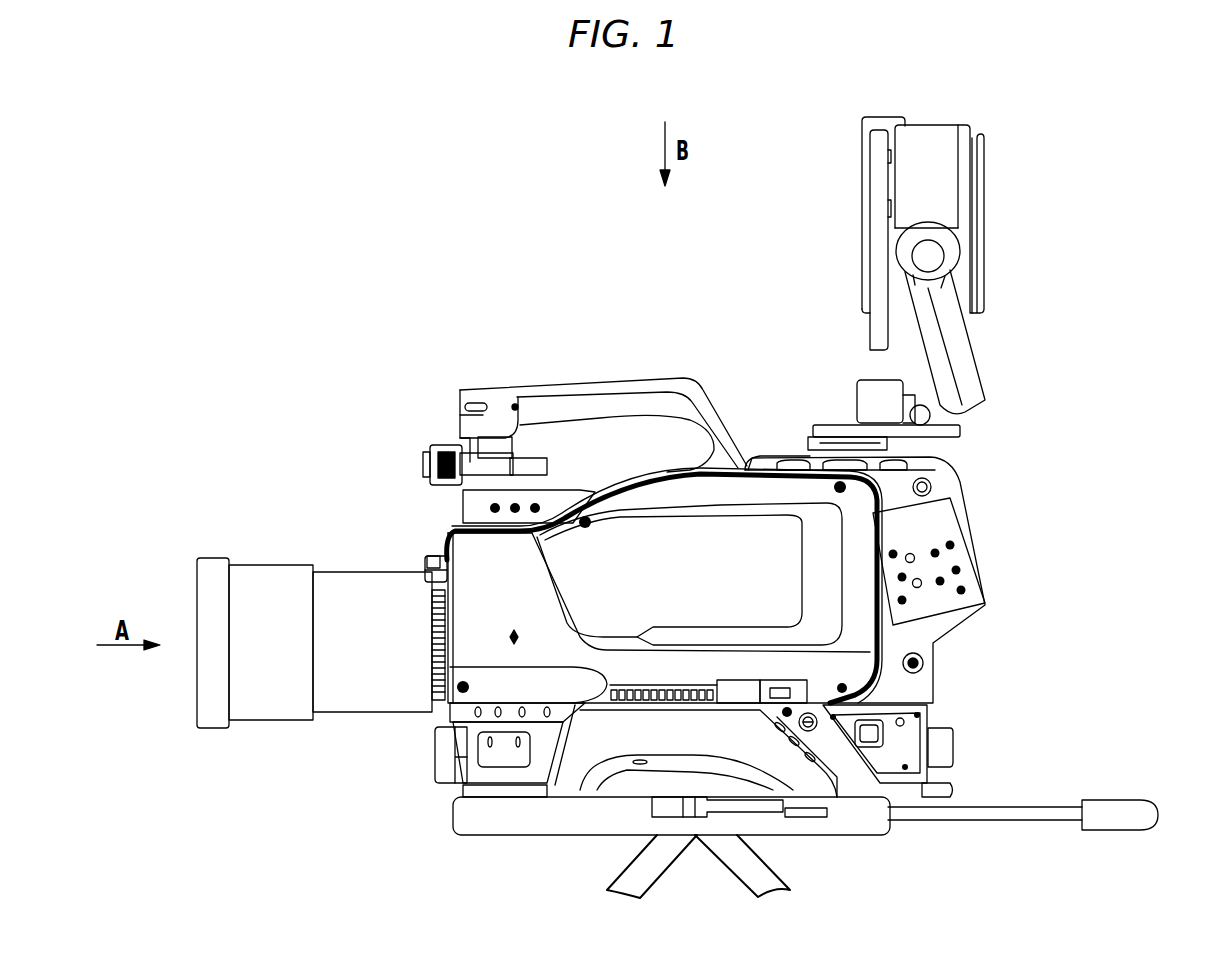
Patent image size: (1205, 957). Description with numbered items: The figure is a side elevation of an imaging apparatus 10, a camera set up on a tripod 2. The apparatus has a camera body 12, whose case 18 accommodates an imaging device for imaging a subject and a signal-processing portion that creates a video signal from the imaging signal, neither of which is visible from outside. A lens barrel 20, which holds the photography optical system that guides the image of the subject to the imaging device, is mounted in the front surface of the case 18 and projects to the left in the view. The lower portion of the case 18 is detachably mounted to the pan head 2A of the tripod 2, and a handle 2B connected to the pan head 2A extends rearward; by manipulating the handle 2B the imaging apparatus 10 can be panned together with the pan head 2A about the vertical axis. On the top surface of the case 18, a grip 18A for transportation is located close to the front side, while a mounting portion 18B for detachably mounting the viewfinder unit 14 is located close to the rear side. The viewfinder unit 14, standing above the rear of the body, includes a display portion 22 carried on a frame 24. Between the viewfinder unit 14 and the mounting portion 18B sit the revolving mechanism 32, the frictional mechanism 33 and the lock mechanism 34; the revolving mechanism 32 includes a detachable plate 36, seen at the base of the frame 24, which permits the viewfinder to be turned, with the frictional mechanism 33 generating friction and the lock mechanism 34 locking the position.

The imaging apparatus 10 is at (246, 222).
The camera body 12 is at (429, 354).
The viewfinder unit 14 is at (1030, 242).
The case 18 is at (455, 530).
The grip 18A is at (597, 380).
The mounting portion 18B is at (803, 455).
The lens barrel 20 is at (270, 575).
The display portion 22 is at (947, 173).
The frame 24 is at (968, 386).
The revolving mechanism 32 is at (855, 400).
The frictional mechanism 33 is at (880, 401).
The lock mechanism 34 is at (909, 409).
The detachable plate 36 is at (960, 435).
The tripod 2 is at (768, 877).
The pan head 2A is at (567, 826).
The handle 2B is at (1118, 805).